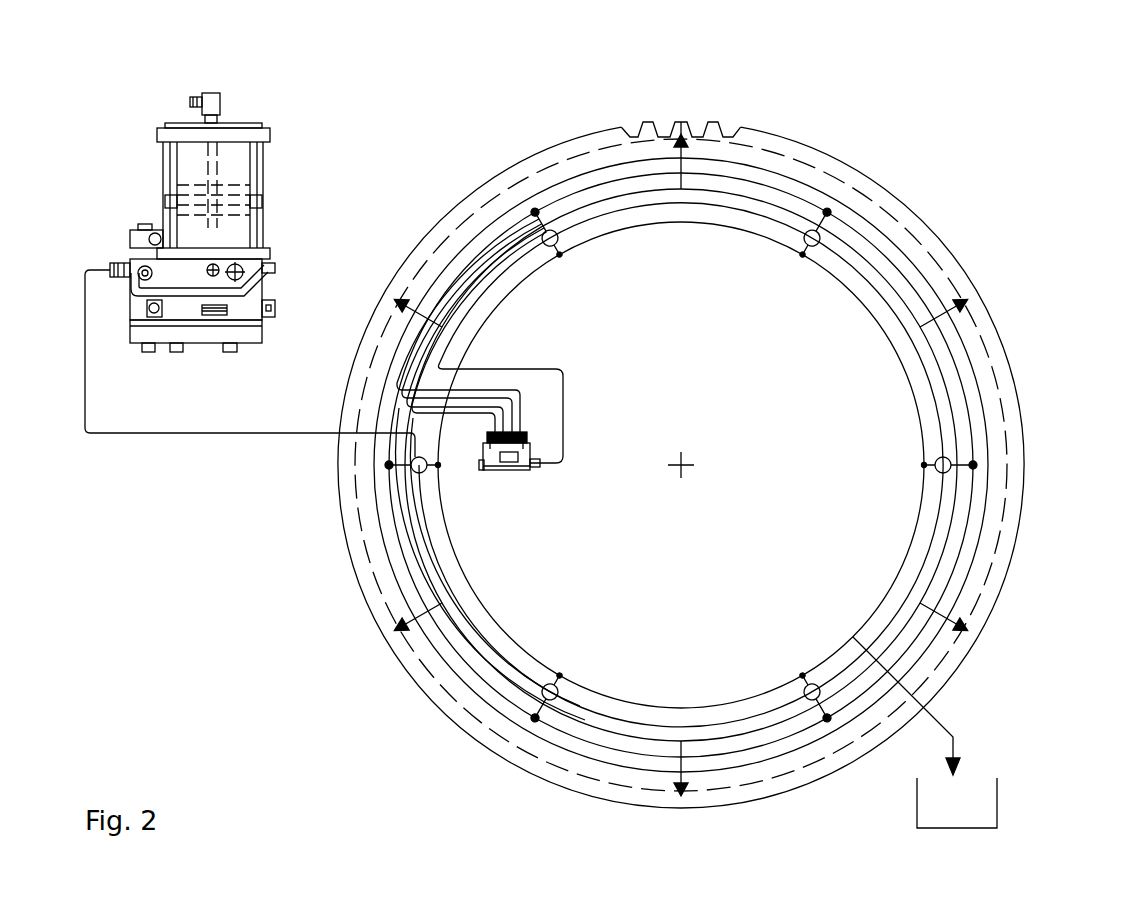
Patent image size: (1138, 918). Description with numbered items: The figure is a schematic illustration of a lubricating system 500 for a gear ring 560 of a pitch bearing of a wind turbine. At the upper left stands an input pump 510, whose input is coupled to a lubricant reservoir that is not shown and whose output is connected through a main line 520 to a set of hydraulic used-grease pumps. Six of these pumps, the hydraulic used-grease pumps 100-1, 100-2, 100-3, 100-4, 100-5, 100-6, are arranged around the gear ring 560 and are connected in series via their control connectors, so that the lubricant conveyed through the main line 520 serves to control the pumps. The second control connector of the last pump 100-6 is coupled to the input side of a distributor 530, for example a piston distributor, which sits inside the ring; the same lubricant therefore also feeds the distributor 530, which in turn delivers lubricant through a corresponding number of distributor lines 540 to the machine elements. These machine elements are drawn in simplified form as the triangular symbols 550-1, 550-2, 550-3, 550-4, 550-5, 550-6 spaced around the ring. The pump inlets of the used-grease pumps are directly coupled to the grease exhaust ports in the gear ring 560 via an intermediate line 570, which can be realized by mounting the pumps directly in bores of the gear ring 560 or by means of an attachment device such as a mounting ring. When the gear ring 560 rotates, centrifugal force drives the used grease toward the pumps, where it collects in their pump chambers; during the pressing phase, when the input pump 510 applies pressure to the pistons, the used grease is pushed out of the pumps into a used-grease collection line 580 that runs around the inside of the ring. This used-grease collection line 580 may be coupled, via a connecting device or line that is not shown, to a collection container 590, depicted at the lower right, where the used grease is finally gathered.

The lubricating system 500 is at (1050, 107).
The input pump 510 is at (272, 131).
The main line 520 is at (182, 433).
The distributor 530 is at (535, 470).
The distributor lines 540 is at (482, 385).
The machine element 550-1 is at (681, 122).
The machine element 550-2 is at (403, 302).
The machine element 550-3 is at (405, 631).
The machine element 550-4 is at (690, 796).
The machine element 550-5 is at (968, 630).
The machine element 550-6 is at (968, 305).
The gear ring 560 is at (903, 203).
The intermediate line 570 is at (981, 402).
The used-grease collection line 580 is at (907, 381).
The collection container 590 is at (997, 806).
The hydraulic used-grease pump 100-1 is at (425, 472).
The hydraulic used-grease pump 100-2 is at (557, 688).
The hydraulic used-grease pump 100-3 is at (806, 685).
The hydraulic used-grease pump 100-4 is at (937, 470).
The hydraulic used-grease pump 100-5 is at (804, 244).
The hydraulic used-grease pump 100-6 is at (558, 242).